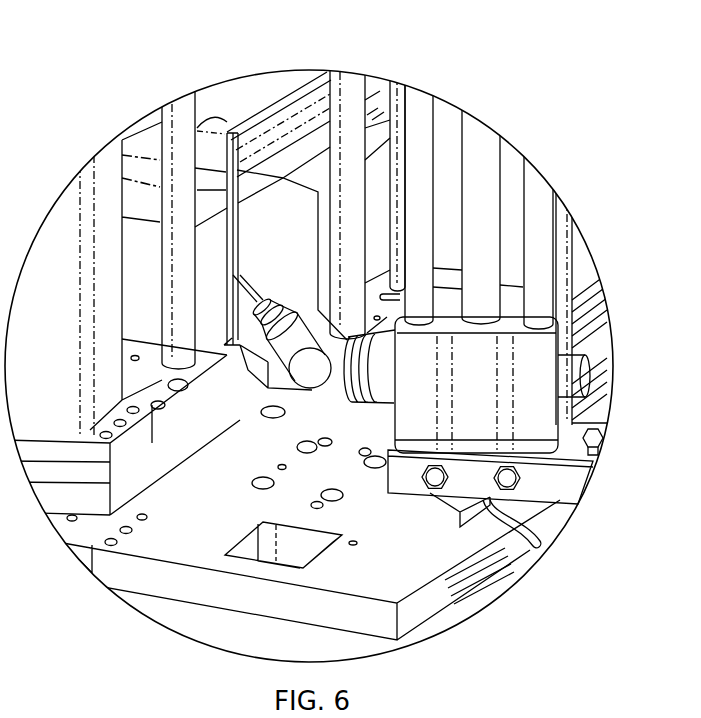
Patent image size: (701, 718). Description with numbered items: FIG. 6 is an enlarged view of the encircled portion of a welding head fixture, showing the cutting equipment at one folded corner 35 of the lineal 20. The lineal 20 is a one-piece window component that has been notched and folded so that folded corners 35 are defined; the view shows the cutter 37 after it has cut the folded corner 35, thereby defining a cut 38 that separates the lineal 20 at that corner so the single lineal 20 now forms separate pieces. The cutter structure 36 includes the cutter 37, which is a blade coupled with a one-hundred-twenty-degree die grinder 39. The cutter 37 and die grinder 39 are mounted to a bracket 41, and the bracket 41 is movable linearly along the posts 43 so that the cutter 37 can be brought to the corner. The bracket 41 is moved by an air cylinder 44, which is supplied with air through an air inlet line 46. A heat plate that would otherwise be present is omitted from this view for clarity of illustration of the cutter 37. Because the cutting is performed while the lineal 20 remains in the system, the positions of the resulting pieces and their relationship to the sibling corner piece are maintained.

The lineal 20 is at (305, 97).
The folded corner 35 is at (237, 100).
The cutter structure 36 is at (383, 417).
The cutter 37 is at (250, 298).
The cut 38 is at (230, 130).
The die grinder 39 is at (308, 377).
The bracket 41 is at (464, 394).
The posts 43 is at (542, 222).
The air cylinder 44 is at (577, 485).
The air inlet line 46 is at (540, 543).